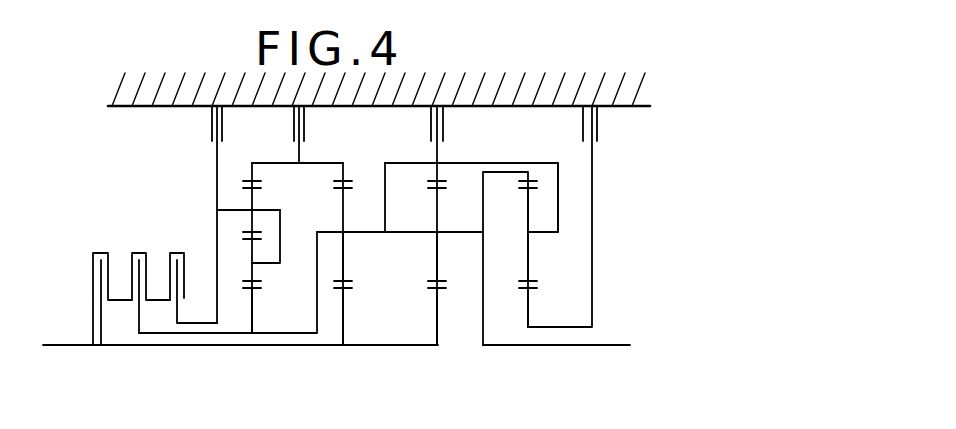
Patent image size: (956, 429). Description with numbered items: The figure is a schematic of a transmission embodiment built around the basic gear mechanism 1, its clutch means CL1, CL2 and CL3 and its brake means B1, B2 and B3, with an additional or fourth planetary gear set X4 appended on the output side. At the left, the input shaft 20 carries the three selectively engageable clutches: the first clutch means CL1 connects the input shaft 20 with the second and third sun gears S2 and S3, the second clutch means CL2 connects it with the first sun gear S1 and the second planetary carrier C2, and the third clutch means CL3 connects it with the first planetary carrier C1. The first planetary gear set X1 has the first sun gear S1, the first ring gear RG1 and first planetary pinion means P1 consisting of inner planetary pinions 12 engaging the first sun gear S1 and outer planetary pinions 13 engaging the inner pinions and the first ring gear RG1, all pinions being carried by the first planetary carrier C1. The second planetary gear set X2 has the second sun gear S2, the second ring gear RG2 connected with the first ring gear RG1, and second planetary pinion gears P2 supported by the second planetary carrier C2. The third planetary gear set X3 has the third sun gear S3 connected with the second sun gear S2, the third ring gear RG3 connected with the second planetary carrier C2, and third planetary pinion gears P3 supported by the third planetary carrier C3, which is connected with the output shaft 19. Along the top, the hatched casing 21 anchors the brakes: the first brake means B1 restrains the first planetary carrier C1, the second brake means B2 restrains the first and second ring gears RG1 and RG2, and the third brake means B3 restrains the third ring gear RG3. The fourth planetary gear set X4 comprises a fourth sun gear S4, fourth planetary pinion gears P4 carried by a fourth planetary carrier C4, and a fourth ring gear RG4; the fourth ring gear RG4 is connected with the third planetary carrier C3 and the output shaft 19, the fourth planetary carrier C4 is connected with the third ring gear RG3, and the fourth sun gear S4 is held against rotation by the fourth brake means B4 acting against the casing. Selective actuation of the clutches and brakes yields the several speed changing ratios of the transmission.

The gear mechanism 1 is at (192, 354).
The inner planetary pinions 12 is at (258, 283).
The outer planetary pinions 13 is at (250, 211).
The output shaft 19 is at (583, 345).
The input shaft 20 is at (75, 347).
The casing 21 is at (123, 107).
The first brake means B1 is at (210, 128).
The second brake means B2 is at (293, 128).
The third brake means B3 is at (427, 128).
The fourth brake means B4 is at (601, 128).
The first clutch means CL1 is at (98, 253).
The second clutch means CL2 is at (137, 252).
The third clutch means CL3 is at (175, 253).
The first ring gear RG1 is at (254, 180).
The second ring gear RG2 is at (344, 180).
The third ring gear RG3 is at (440, 180).
The fourth ring gear RG4 is at (530, 180).
The first planetary pinion means P1 is at (232, 204).
The second planetary pinion gears P2 is at (346, 259).
The third planetary pinion gears P3 is at (435, 215).
The fourth planetary pinion gears P4 is at (527, 231).
The first planetary carrier C1 is at (279, 236).
The second planetary carrier C2 is at (365, 232).
The third planetary carrier C3 is at (462, 232).
The fourth planetary carrier C4 is at (544, 233).
The first sun gear S1 is at (255, 330).
The second sun gear S2 is at (346, 325).
The third sun gear S3 is at (438, 326).
The fourth sun gear S4 is at (532, 314).
The first planetary gear set X1 is at (245, 304).
The second planetary gear set X2 is at (337, 310).
The third planetary gear set X3 is at (432, 305).
The fourth planetary gear set X4 is at (522, 304).